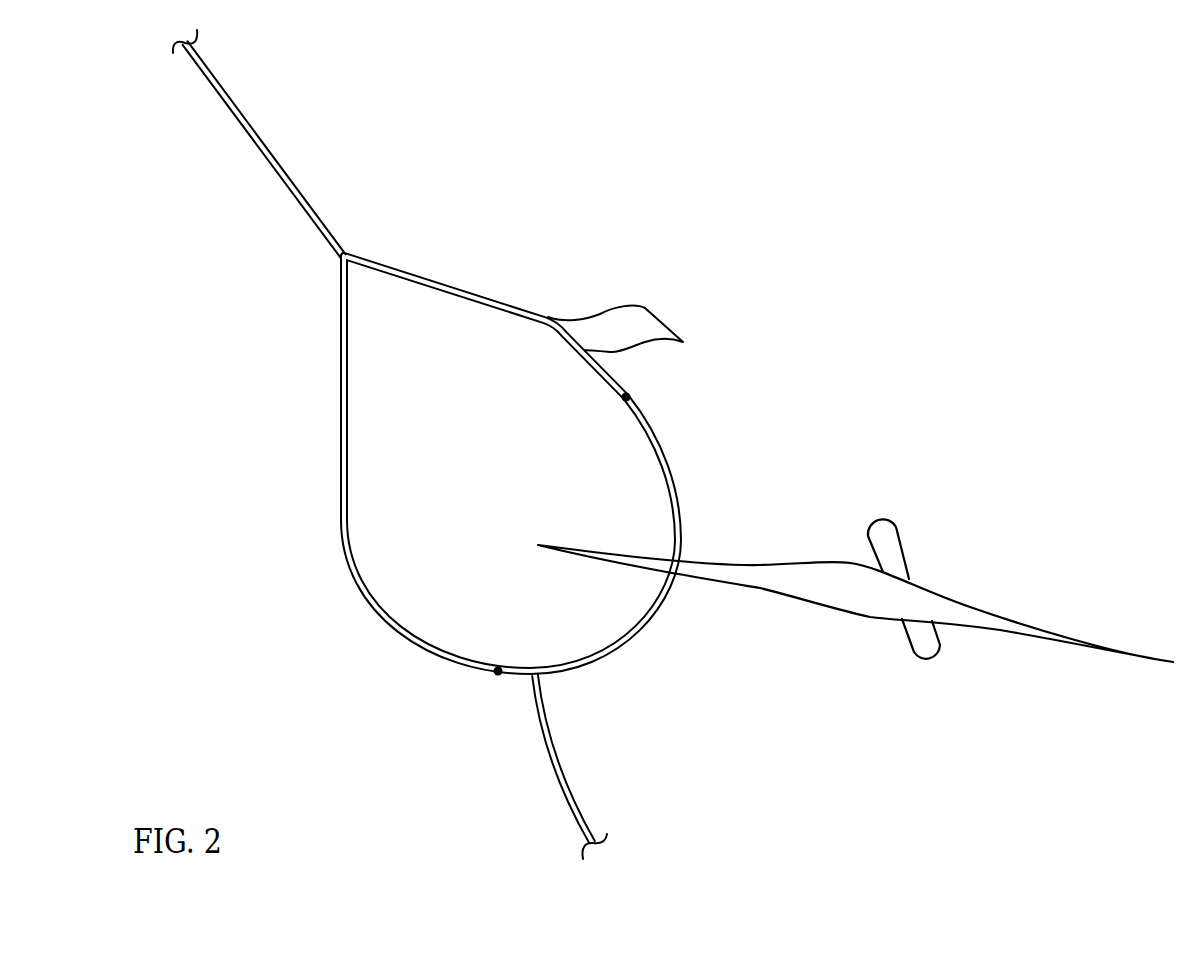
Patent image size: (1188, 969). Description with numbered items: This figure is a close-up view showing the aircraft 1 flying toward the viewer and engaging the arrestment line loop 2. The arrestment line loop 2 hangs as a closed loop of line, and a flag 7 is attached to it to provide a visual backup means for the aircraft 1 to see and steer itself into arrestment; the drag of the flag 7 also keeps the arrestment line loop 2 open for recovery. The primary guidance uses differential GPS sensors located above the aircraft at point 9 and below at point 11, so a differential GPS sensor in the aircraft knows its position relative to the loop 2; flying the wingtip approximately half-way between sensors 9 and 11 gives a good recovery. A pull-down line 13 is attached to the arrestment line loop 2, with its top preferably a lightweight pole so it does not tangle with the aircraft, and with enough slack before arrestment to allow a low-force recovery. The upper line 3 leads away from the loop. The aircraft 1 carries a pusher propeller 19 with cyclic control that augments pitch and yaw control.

The aircraft 1 is at (838, 563).
The arrestment line loop 2 is at (672, 467).
The tubular shaft 3 is at (246, 117).
The flag 7 is at (624, 305).
The point 9 (upper differential GPS sensor) 9 is at (620, 398).
The point 11 (lower differential GPS sensor) 11 is at (497, 676).
The pull-down line 13 is at (560, 752).
The pusher propeller 19 is at (943, 645).